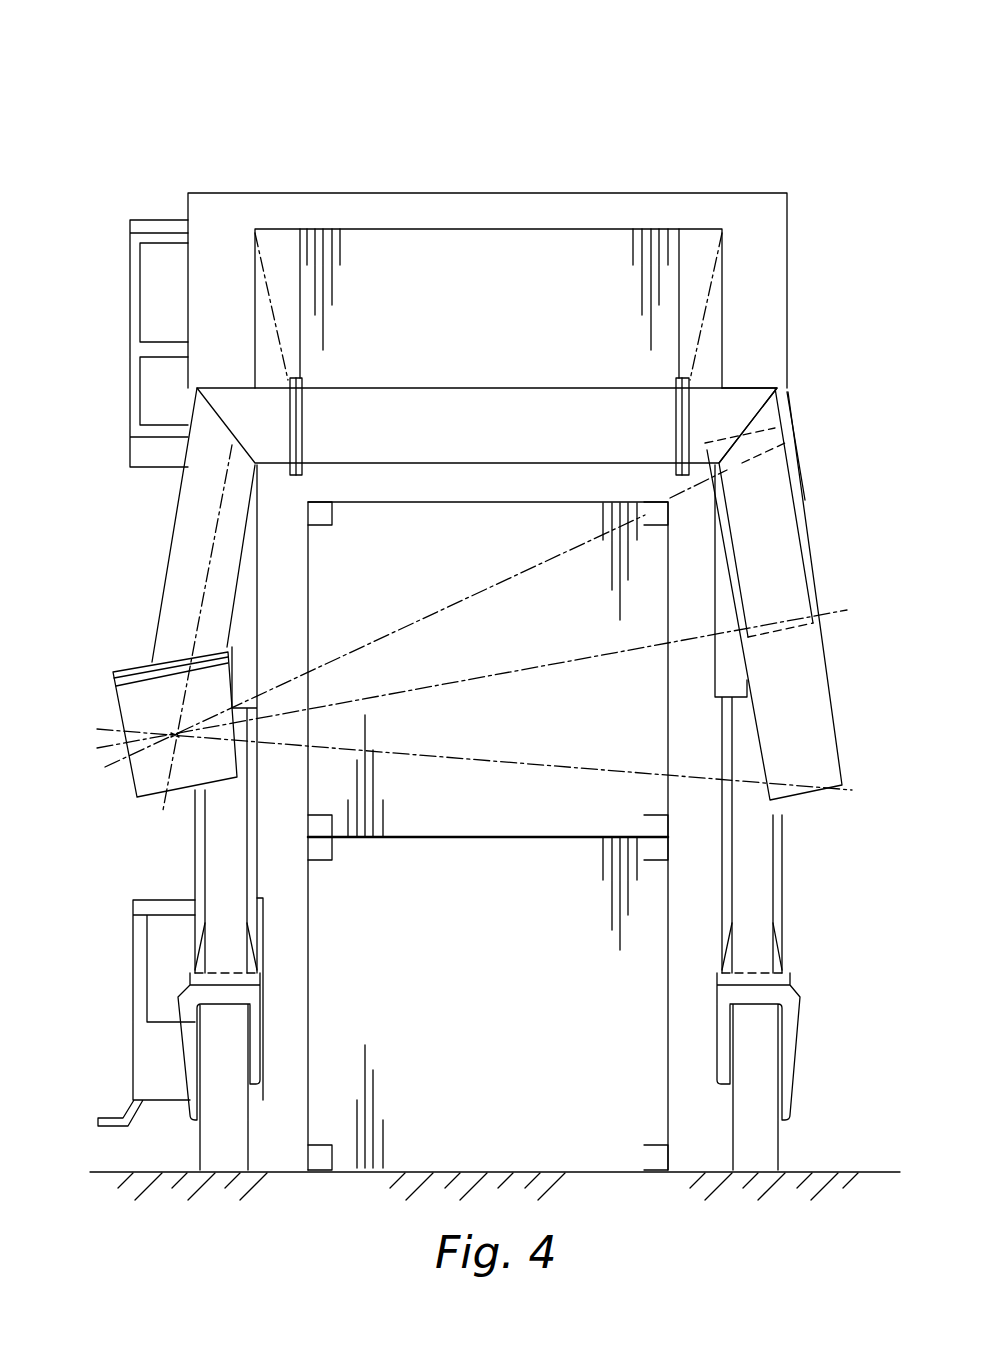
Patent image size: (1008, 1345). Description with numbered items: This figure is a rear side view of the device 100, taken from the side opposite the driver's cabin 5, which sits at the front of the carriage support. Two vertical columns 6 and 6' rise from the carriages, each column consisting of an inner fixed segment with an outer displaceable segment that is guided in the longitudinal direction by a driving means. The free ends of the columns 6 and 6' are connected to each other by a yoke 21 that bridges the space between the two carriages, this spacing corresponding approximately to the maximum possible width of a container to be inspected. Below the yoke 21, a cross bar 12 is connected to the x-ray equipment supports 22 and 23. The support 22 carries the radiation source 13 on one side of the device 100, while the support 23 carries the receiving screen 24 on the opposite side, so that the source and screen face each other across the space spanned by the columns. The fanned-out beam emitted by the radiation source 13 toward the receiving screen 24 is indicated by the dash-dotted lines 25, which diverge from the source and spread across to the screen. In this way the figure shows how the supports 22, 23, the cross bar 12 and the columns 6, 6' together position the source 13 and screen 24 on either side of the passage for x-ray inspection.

The device 100 is at (519, 124).
The yoke 21 is at (413, 262).
The cross bar 12 is at (593, 404).
The x-ray equipment support 22 is at (182, 528).
The x-ray equipment support 23 is at (725, 400).
The receiving screen 24 is at (802, 653).
The radiation source 13 is at (143, 782).
The dash-dotted lines 25 is at (414, 617).
The vertical column 6 is at (175, 817).
The vertical column 6' is at (799, 817).
The driver's cabin 5 is at (147, 1052).